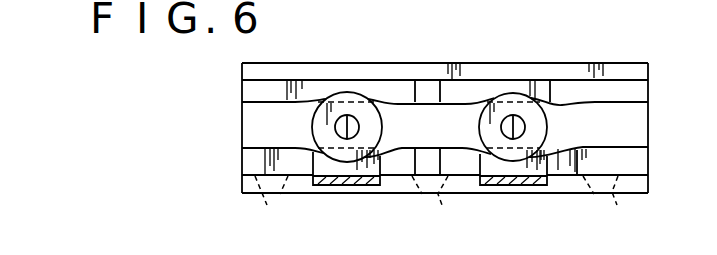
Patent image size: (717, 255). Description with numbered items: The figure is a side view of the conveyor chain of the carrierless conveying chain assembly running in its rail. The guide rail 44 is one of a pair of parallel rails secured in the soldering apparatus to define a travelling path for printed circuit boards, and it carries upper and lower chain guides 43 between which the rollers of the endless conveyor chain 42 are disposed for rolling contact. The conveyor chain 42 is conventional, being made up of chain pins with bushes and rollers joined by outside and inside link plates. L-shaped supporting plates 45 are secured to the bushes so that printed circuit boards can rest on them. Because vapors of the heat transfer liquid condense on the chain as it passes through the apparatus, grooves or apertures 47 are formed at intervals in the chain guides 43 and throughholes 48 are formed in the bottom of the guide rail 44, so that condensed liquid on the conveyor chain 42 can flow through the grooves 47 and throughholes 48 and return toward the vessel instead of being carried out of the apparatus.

The conveyor chain 42 is at (390, 92).
The chain guides 43 is at (630, 90).
The guide rails 44 is at (577, 73).
The supporting plates 45 is at (340, 165).
The grooves or apertures 47 is at (428, 90).
The throughholes 48 is at (449, 202).